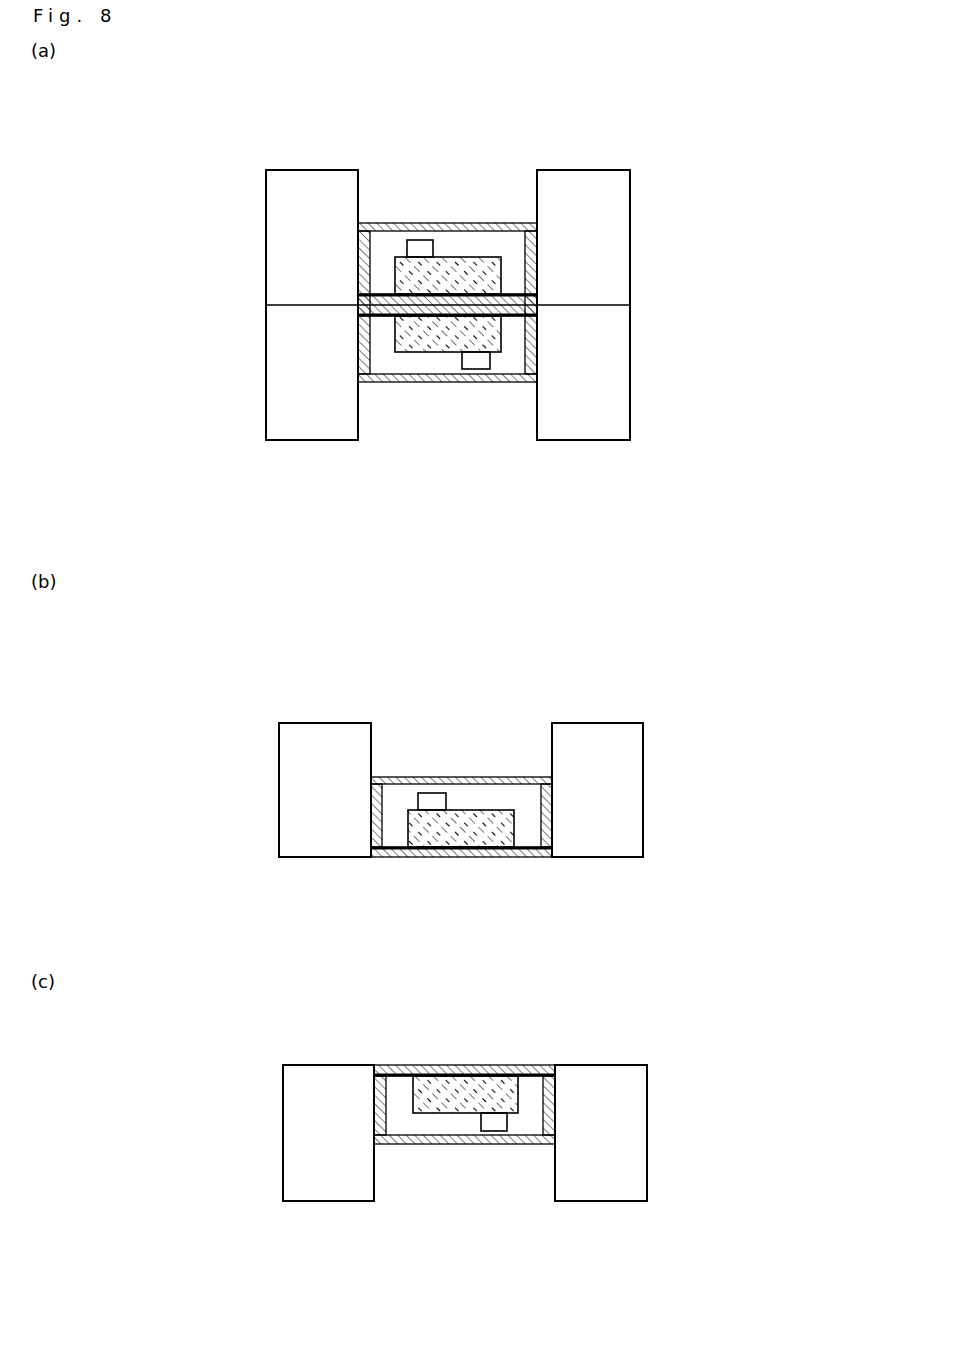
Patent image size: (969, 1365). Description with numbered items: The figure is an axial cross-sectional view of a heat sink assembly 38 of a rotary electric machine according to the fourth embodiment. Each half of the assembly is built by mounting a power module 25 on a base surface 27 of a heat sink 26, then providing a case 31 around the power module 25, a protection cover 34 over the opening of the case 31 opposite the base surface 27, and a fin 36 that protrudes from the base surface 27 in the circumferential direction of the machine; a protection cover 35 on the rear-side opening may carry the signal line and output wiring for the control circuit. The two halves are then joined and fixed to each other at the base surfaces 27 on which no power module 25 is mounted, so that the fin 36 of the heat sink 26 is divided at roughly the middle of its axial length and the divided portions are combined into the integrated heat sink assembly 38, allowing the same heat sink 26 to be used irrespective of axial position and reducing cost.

The power module 25 is at (456, 270).
The heat sink 26 is at (300, 170).
The base surface 27 is at (520, 295).
The case 31 is at (362, 270).
The protection cover 34 is at (495, 382).
The protection cover 35 is at (408, 223).
The fin 36 is at (285, 235).
The heat sink assembly 38 is at (488, 168).